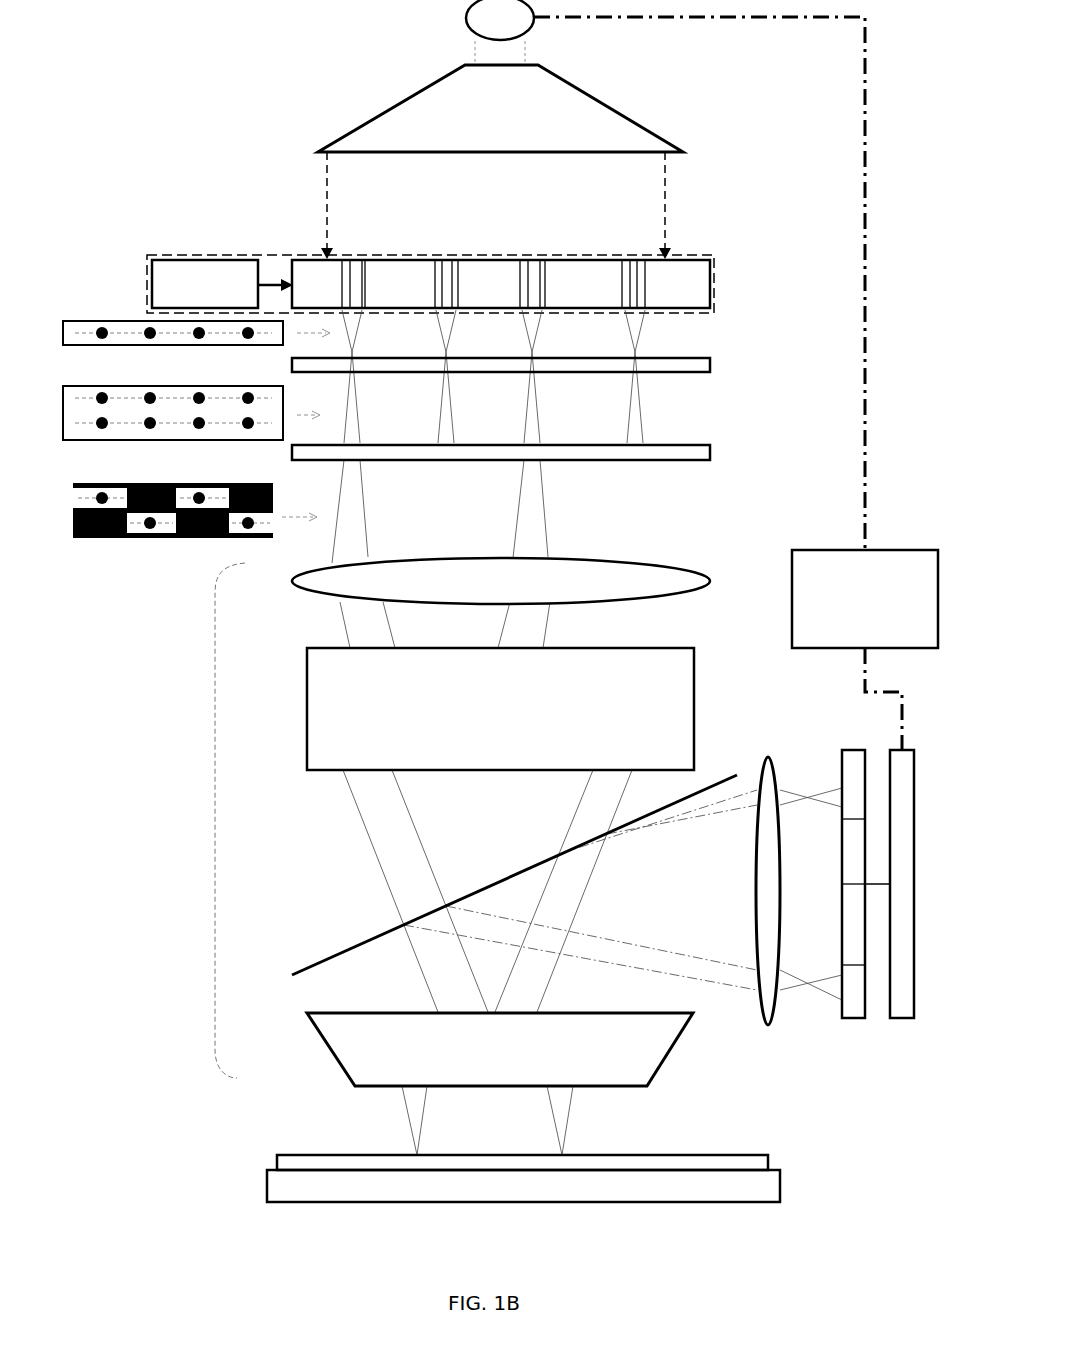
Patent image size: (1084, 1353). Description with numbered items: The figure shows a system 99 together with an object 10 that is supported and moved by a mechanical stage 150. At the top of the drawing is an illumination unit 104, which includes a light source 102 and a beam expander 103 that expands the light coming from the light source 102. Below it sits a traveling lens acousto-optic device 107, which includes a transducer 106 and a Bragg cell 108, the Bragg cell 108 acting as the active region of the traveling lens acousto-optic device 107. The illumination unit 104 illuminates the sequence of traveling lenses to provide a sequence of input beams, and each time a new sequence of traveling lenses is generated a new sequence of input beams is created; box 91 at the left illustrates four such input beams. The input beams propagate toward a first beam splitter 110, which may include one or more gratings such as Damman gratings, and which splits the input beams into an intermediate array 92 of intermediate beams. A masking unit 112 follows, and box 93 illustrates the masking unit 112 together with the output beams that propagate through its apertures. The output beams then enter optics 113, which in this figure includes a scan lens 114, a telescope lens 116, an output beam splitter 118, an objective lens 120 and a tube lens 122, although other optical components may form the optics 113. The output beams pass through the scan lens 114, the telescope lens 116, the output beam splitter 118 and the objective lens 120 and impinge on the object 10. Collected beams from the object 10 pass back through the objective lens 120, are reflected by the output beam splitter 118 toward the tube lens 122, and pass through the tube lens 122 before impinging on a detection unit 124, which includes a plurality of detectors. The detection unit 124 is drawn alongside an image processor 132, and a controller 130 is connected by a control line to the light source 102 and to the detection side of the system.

The object 10 is at (712, 1155).
The box 91 is at (137, 320).
The intermediate array 92 is at (92, 386).
The box 93 is at (118, 537).
The system 99 is at (213, 1237).
The light source 102 is at (516, 29).
The beam expander 103 is at (518, 120).
The illumination unit 104 is at (320, 90).
The transducer 106 is at (223, 296).
The traveling lens acousto-optic device 107 is at (713, 285).
The Bragg cell 108 is at (697, 296).
The first beam splitter 110 is at (745, 352).
The masking unit 112 is at (712, 457).
The optics 113 is at (215, 842).
The scan lens 114 is at (568, 592).
The telescope lens 116 is at (590, 721).
The output beam splitter 118 is at (343, 947).
The objective lens 120 is at (518, 1061).
The tube lens 122 is at (768, 755).
The detection unit 124 is at (853, 750).
The controller 130 is at (883, 625).
The image processor 132 is at (905, 1020).
The mechanical stage 150 is at (542, 1198).